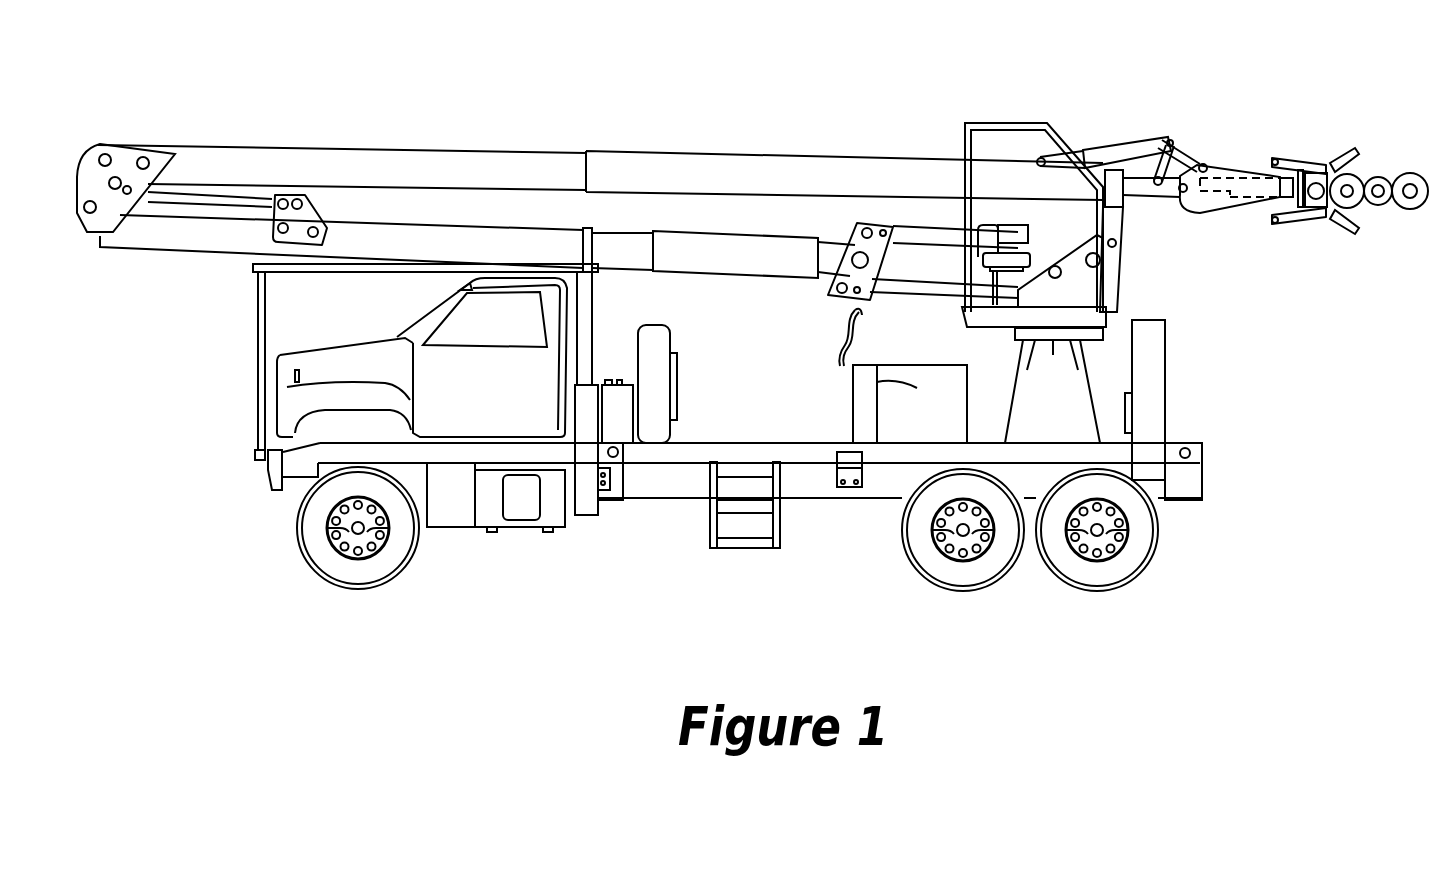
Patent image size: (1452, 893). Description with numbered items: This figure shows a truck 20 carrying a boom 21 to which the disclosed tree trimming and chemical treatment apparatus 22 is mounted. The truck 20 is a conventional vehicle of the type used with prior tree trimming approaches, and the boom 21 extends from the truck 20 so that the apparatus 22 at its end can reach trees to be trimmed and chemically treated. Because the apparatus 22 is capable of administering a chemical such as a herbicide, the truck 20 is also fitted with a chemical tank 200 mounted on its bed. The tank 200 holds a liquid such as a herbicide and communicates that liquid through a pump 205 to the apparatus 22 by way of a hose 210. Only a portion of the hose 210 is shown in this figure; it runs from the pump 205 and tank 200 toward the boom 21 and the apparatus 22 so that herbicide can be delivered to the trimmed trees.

The truck 20 is at (195, 347).
The boom 21 is at (663, 135).
The tree trimming and chemical treatment apparatus 22 is at (1330, 128).
The chemical tank 200 is at (855, 392).
The pump 205 is at (866, 423).
The hose 210 is at (862, 348).